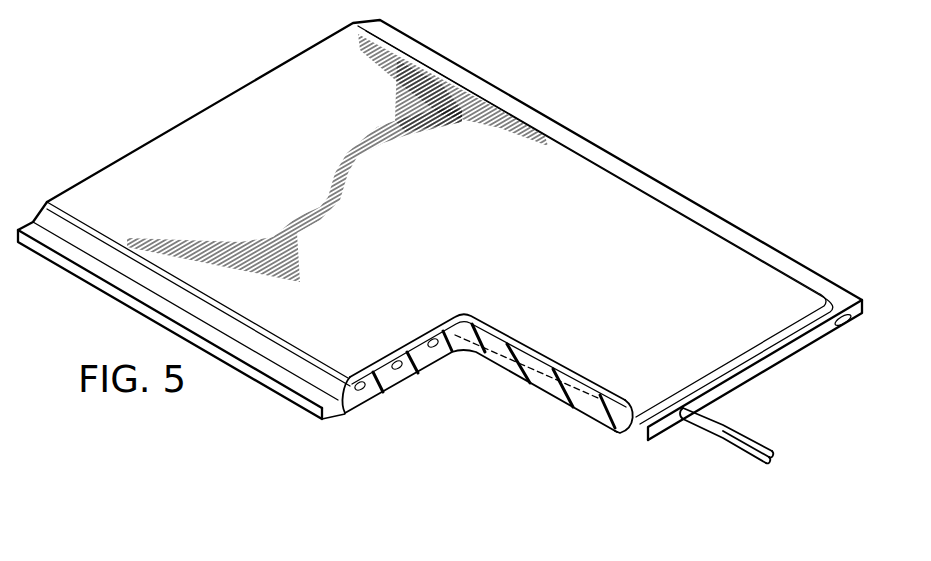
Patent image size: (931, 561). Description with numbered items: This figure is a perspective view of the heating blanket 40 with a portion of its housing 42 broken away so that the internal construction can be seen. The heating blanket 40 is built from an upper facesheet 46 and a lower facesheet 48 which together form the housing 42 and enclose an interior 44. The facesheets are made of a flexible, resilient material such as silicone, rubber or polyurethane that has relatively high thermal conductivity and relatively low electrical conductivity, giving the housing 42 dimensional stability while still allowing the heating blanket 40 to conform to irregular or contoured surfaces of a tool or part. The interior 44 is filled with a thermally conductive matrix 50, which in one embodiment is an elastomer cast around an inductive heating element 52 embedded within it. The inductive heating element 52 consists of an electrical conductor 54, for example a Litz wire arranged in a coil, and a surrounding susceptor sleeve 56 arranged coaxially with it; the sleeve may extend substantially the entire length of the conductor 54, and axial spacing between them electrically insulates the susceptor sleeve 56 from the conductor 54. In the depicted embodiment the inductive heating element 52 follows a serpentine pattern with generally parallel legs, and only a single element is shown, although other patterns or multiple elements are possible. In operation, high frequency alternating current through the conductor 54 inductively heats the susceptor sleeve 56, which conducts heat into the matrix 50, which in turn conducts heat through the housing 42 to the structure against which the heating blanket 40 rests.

The heating blanket 40 is at (598, 68).
The housing 42 is at (177, 119).
The interior 44 is at (456, 338).
The upper facesheet 46 is at (270, 82).
The lower facesheet 48 is at (612, 432).
The thermally conductive matrix 50 is at (391, 376).
The inductive heating element 52 is at (754, 437).
The electrical conductor 54 is at (360, 382).
The susceptor sleeve 56 is at (552, 368).